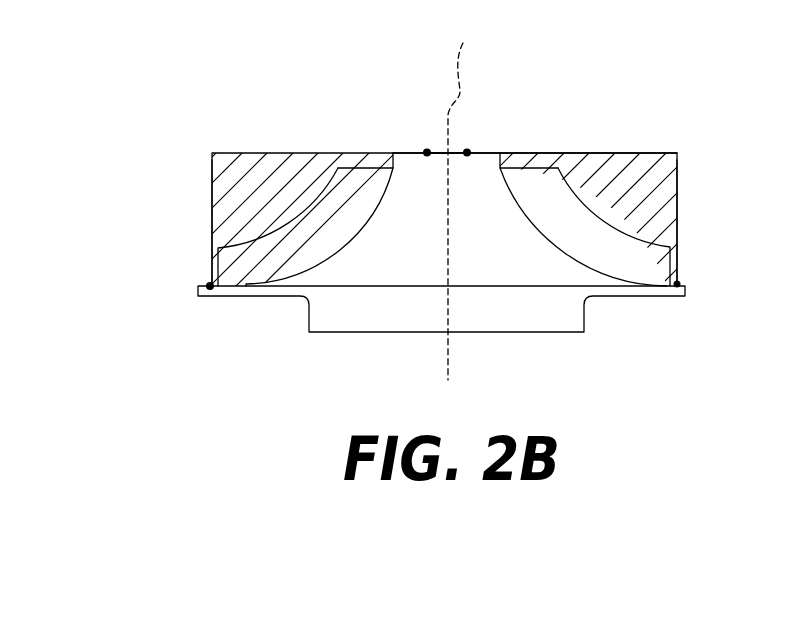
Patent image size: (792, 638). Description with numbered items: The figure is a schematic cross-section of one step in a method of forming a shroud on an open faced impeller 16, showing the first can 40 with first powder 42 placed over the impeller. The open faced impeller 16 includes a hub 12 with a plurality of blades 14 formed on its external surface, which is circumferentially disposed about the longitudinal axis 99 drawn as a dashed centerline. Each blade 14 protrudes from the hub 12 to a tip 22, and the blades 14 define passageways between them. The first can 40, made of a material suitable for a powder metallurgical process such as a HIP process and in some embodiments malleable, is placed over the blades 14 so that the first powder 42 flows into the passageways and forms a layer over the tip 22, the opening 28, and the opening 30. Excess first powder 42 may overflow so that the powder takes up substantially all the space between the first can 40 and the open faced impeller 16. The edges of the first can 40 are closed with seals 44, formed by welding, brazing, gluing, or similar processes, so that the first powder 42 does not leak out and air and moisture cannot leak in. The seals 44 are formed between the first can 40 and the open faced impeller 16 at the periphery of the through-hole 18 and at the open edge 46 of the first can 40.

The hub 12 is at (485, 162).
The blades 14 is at (616, 243).
The open faced impeller 16 is at (588, 327).
The through-hole 18 is at (453, 150).
The tip 22 is at (277, 227).
The opening 28 is at (550, 148).
The opening 30 is at (680, 265).
The first can 40 is at (634, 153).
The first powder 42 is at (230, 188).
The seals 44 is at (467, 152).
The open edge 46 is at (210, 286).
The longitudinal axis 99 is at (473, 197).